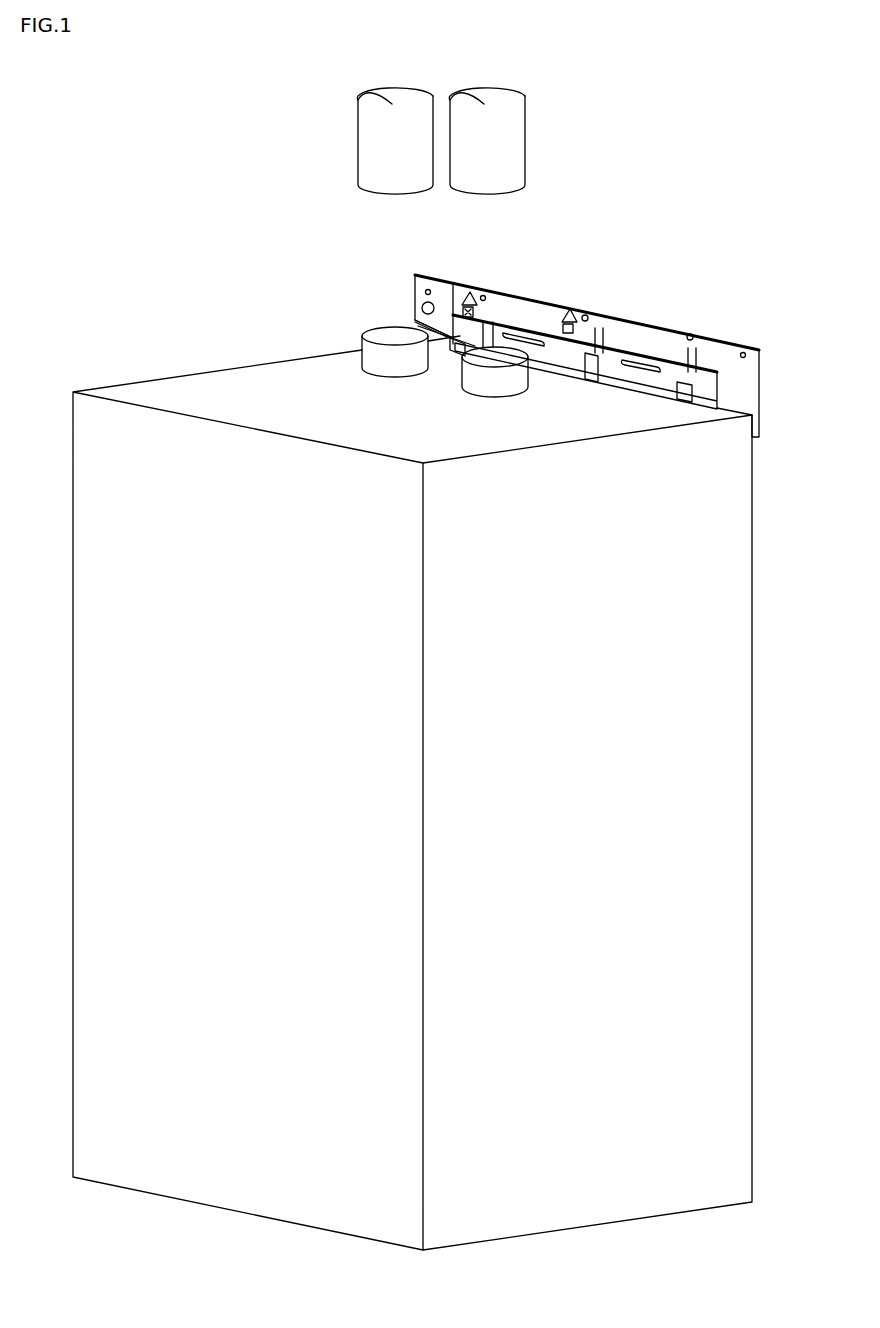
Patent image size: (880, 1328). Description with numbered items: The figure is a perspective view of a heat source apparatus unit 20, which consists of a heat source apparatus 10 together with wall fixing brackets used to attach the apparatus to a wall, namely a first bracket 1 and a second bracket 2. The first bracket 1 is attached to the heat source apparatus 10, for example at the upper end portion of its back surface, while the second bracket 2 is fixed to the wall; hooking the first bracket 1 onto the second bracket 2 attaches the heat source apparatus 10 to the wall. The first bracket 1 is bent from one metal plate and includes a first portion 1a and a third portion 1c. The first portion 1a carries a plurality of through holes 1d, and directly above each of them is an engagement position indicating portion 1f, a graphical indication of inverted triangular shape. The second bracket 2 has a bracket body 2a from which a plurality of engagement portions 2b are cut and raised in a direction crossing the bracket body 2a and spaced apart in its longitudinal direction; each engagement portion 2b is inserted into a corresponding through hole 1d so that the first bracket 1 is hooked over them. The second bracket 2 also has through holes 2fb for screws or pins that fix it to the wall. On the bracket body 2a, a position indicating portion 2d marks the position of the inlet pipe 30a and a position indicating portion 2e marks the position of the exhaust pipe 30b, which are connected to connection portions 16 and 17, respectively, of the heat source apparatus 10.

The first bracket 1 is at (446, 300).
The first portion 1a is at (440, 334).
The third portion 1c is at (470, 342).
The through holes 1d is at (500, 340).
The engagement position indicating portions 1f is at (490, 322).
The second bracket 2 is at (422, 260).
The bracket body 2a is at (421, 306).
The engagement portions 2b is at (452, 340).
The position indicating portion 2d is at (468, 290).
The position indicating portion 2e is at (566, 308).
The through holes 2fb is at (425, 290).
The heat source apparatus 10 is at (225, 346).
The connection portion 16 is at (375, 356).
The connection portion 17 is at (480, 387).
The heat source apparatus unit 20 is at (328, 233).
The inlet pipe 30a is at (358, 114).
The exhaust pipe 30b is at (525, 117).